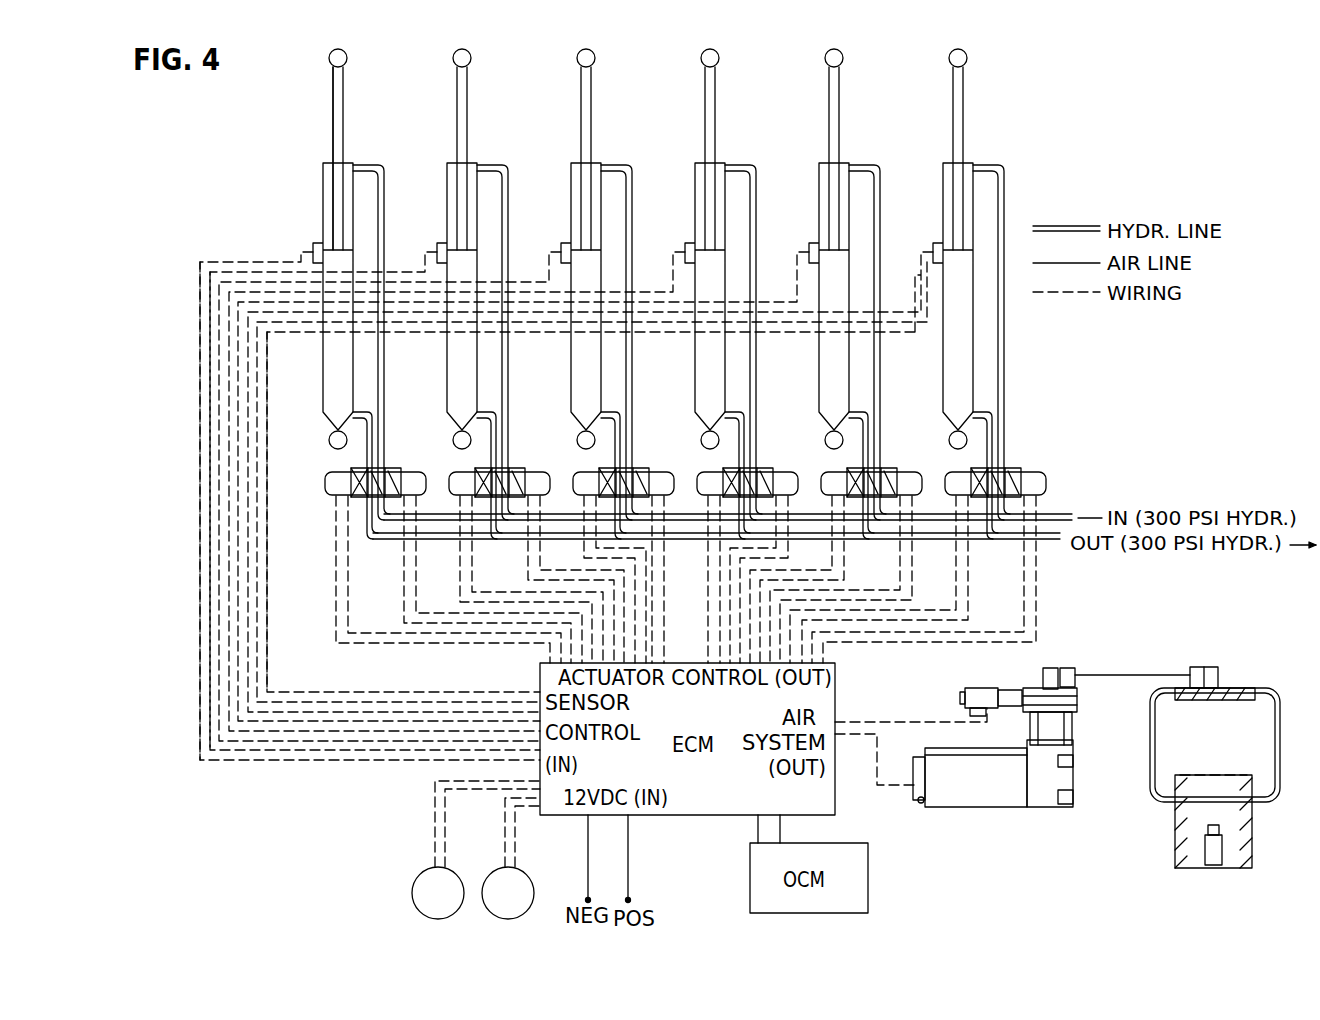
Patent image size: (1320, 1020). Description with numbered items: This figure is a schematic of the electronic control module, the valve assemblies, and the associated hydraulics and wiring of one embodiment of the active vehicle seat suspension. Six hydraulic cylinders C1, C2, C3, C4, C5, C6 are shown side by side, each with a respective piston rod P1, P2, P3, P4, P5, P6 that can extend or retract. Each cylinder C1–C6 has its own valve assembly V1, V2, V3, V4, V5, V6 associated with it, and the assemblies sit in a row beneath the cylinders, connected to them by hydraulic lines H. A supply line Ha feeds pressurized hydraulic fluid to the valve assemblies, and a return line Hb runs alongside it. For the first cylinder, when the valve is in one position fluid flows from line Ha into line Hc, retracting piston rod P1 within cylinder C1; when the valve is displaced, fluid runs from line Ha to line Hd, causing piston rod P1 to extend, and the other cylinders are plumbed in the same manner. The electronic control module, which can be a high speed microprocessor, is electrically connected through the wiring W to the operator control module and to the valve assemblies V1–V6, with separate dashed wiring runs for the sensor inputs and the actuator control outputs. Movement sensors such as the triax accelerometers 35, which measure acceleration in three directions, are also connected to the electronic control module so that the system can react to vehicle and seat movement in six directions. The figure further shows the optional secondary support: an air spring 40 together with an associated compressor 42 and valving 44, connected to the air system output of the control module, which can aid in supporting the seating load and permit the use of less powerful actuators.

The piston rod P1 is at (334, 104).
The piston rod P2 is at (458, 102).
The piston rod P3 is at (582, 102).
The piston rod P4 is at (706, 102).
The piston rod P5 is at (830, 100).
The piston rod P6 is at (954, 98).
The cylinder C1 is at (323, 380).
The cylinder C2 is at (447, 372).
The cylinder C3 is at (571, 360).
The cylinder C4 is at (695, 360).
The cylinder C5 is at (819, 360).
The cylinder C6 is at (943, 360).
The valve assembly V1 is at (331, 496).
The valve assembly V2 is at (516, 472).
The valve assembly V3 is at (640, 472).
The valve assembly V4 is at (764, 472).
The valve assembly V5 is at (916, 470).
The valve assembly V6 is at (1042, 470).
The hydraulic line H is at (1004, 190).
The hydraulic line Ha is at (425, 516).
The hydraulic line Hb is at (378, 540).
The hydraulic line Hc is at (382, 466).
The hydraulic line Hd is at (365, 448).
The wiring W is at (248, 260).
The triax accelerometers 35 is at (495, 877).
The air spring 40 is at (1256, 684).
The compressor 42 is at (978, 808).
The valving 44 is at (1023, 686).